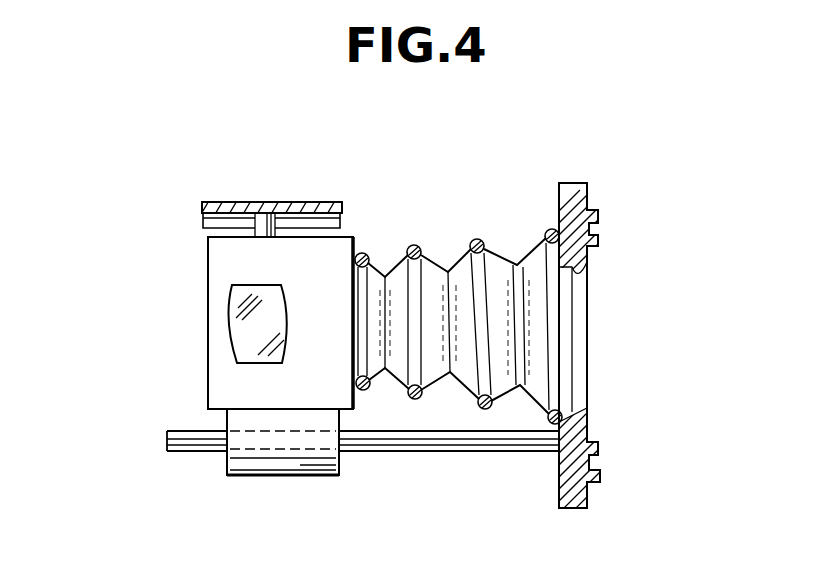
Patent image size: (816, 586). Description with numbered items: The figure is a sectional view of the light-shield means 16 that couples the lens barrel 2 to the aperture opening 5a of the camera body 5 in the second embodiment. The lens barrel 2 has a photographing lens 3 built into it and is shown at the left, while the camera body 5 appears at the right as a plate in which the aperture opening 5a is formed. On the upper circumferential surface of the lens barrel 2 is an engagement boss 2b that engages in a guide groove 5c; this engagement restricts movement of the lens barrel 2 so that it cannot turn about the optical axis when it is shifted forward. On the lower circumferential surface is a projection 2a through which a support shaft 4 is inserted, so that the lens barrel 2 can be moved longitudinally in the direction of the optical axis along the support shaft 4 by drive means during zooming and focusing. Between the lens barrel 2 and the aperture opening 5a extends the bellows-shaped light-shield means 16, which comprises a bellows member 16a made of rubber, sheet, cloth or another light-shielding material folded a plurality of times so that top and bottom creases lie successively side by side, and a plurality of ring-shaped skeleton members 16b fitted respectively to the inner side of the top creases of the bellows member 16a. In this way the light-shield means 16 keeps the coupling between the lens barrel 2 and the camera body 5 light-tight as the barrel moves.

The lens barrel 2 is at (333, 268).
The projection 2a is at (285, 460).
The engagement boss 2b is at (262, 220).
The photographing lens 3 is at (240, 345).
The support shaft 4 is at (400, 440).
The camera body 5 is at (582, 359).
The aperture opening 5a is at (582, 277).
The guide groove 5c is at (315, 220).
The light-shield means 16 is at (458, 336).
The bellows member 16a is at (497, 278).
The ring-shaped skeleton members 16b is at (412, 245).